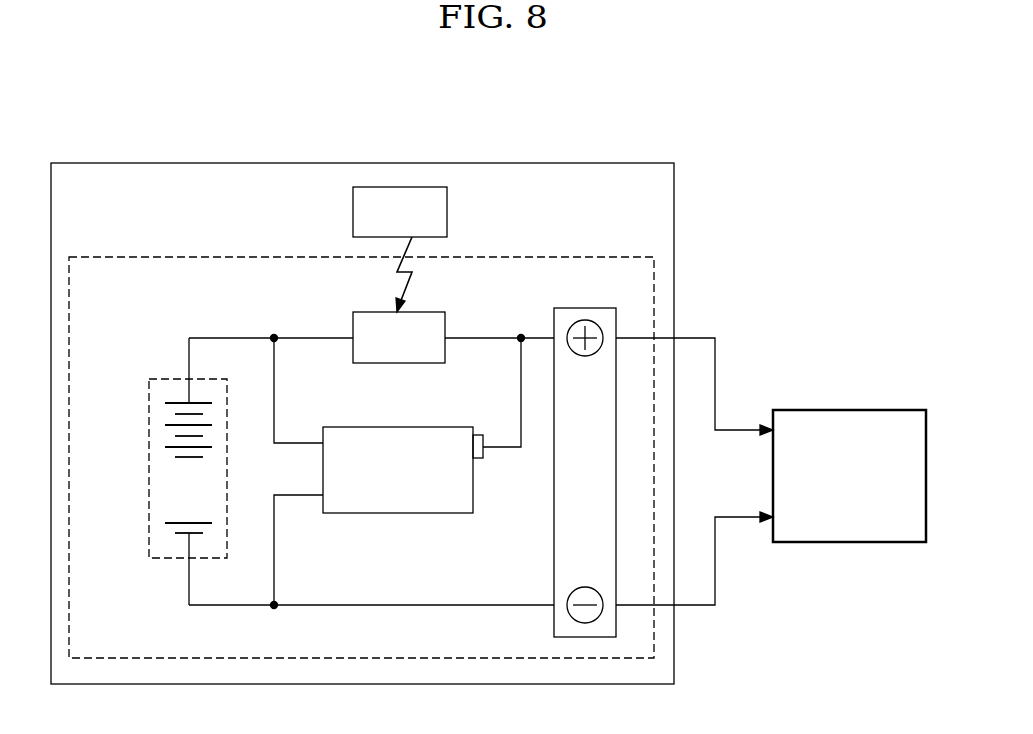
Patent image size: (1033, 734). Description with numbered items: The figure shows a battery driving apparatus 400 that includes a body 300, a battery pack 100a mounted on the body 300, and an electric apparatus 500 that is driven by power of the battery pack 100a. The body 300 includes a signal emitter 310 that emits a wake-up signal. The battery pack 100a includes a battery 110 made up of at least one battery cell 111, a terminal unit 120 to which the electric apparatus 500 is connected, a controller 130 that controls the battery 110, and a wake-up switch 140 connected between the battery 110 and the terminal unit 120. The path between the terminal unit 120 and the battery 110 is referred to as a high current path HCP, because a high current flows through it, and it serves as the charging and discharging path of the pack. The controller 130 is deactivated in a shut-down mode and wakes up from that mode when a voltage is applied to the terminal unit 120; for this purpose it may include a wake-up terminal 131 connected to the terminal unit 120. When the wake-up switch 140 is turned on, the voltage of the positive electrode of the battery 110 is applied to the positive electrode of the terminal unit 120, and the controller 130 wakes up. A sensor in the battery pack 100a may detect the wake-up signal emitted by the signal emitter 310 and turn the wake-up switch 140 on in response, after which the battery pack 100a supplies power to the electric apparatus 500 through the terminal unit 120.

The battery driving apparatus 400 is at (543, 91).
The body 300 is at (583, 165).
The battery pack 100a is at (582, 258).
The signal emitter 310 is at (447, 212).
The wake-up switch 140 is at (421, 312).
The high current path HCP is at (498, 338).
The terminal unit 120 is at (582, 308).
The battery 110 is at (154, 471).
The battery cell 111 is at (178, 400).
The controller 130 is at (402, 427).
The wake-up terminal 131 is at (478, 459).
The electric apparatus 500 is at (853, 410).